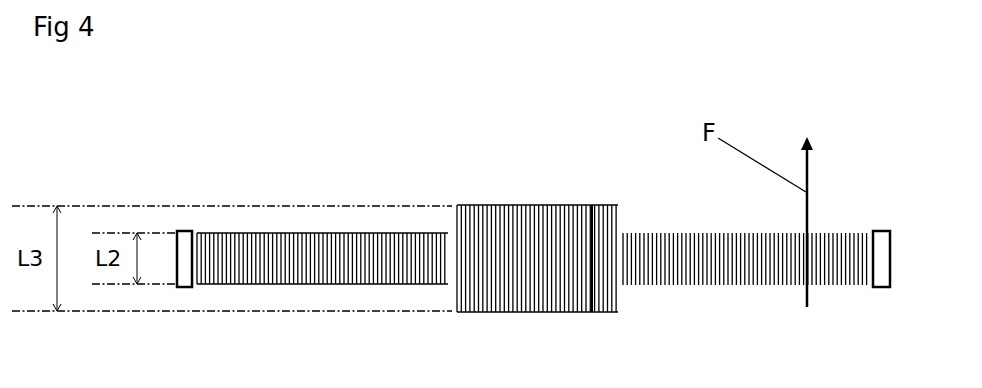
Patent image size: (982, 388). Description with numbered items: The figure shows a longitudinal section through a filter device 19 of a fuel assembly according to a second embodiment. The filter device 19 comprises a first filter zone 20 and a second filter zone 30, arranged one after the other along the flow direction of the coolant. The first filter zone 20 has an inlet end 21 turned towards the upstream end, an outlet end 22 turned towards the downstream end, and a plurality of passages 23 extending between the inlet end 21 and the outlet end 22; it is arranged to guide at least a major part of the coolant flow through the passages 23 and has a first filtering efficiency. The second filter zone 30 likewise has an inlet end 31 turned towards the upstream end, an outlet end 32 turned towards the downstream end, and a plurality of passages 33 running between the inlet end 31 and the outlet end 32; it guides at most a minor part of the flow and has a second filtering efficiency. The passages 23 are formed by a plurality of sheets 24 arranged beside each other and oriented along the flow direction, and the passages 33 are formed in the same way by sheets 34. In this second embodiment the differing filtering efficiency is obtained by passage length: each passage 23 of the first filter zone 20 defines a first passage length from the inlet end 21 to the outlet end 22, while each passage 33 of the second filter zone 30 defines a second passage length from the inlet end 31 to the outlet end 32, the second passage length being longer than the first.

The filter device 19 is at (226, 182).
The first filter zone 20 is at (316, 258).
The inlet end 21 is at (250, 287).
The outlet end 22 is at (345, 228).
The passages 23 is at (368, 255).
The second filter zone 30 is at (512, 235).
The inlet end 31 is at (593, 312).
The outlet end 32 is at (566, 205).
The passages 33 is at (537, 270).
The sheets 34 is at (591, 207).
The sheets 24 is at (747, 278).